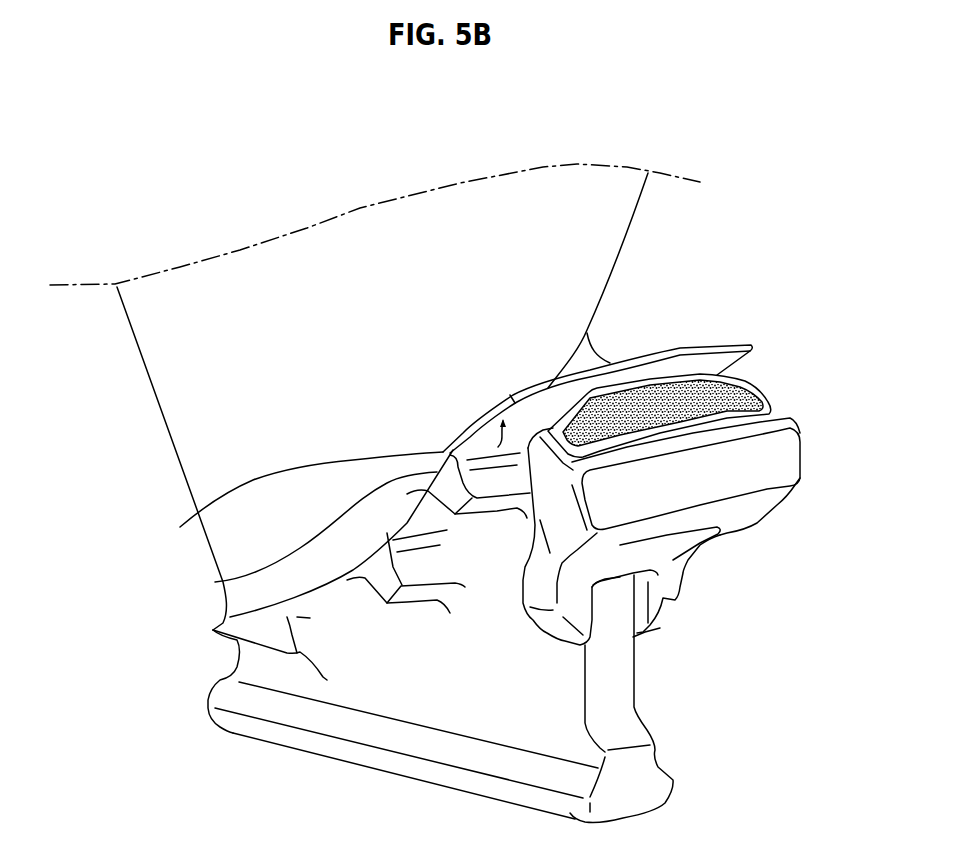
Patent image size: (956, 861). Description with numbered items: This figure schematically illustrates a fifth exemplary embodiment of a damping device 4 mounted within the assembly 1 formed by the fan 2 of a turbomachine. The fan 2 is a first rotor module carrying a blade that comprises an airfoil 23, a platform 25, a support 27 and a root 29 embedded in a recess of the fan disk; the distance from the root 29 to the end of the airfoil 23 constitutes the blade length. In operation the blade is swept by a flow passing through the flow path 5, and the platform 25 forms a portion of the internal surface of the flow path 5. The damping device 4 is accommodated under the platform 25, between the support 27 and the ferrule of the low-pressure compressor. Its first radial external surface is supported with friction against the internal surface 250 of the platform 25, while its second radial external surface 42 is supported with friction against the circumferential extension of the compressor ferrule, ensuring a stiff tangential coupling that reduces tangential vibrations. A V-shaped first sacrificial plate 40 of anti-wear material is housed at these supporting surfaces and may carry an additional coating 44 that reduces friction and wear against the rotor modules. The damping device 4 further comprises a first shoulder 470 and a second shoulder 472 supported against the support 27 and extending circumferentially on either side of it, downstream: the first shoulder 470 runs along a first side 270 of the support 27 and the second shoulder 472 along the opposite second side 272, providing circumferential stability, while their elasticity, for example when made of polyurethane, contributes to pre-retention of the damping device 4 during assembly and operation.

The assembly 1 is at (780, 619).
The fan 2 is at (107, 485).
The damping device 4 is at (553, 518).
The flow path 5 is at (693, 266).
The airfoil 23 is at (371, 330).
The platform 25 is at (215, 582).
The support 27 is at (652, 696).
The root 29 is at (410, 754).
The first sacrificial plate 40 is at (645, 380).
The second radial external surface 42 is at (743, 373).
The additional coating 44 is at (690, 392).
The internal surface of the platform 250 is at (294, 500).
The first side of the support 270 is at (533, 692).
The second side of the support 272 is at (640, 665).
The first shoulder 470 is at (585, 615).
The second shoulder 472 is at (667, 598).